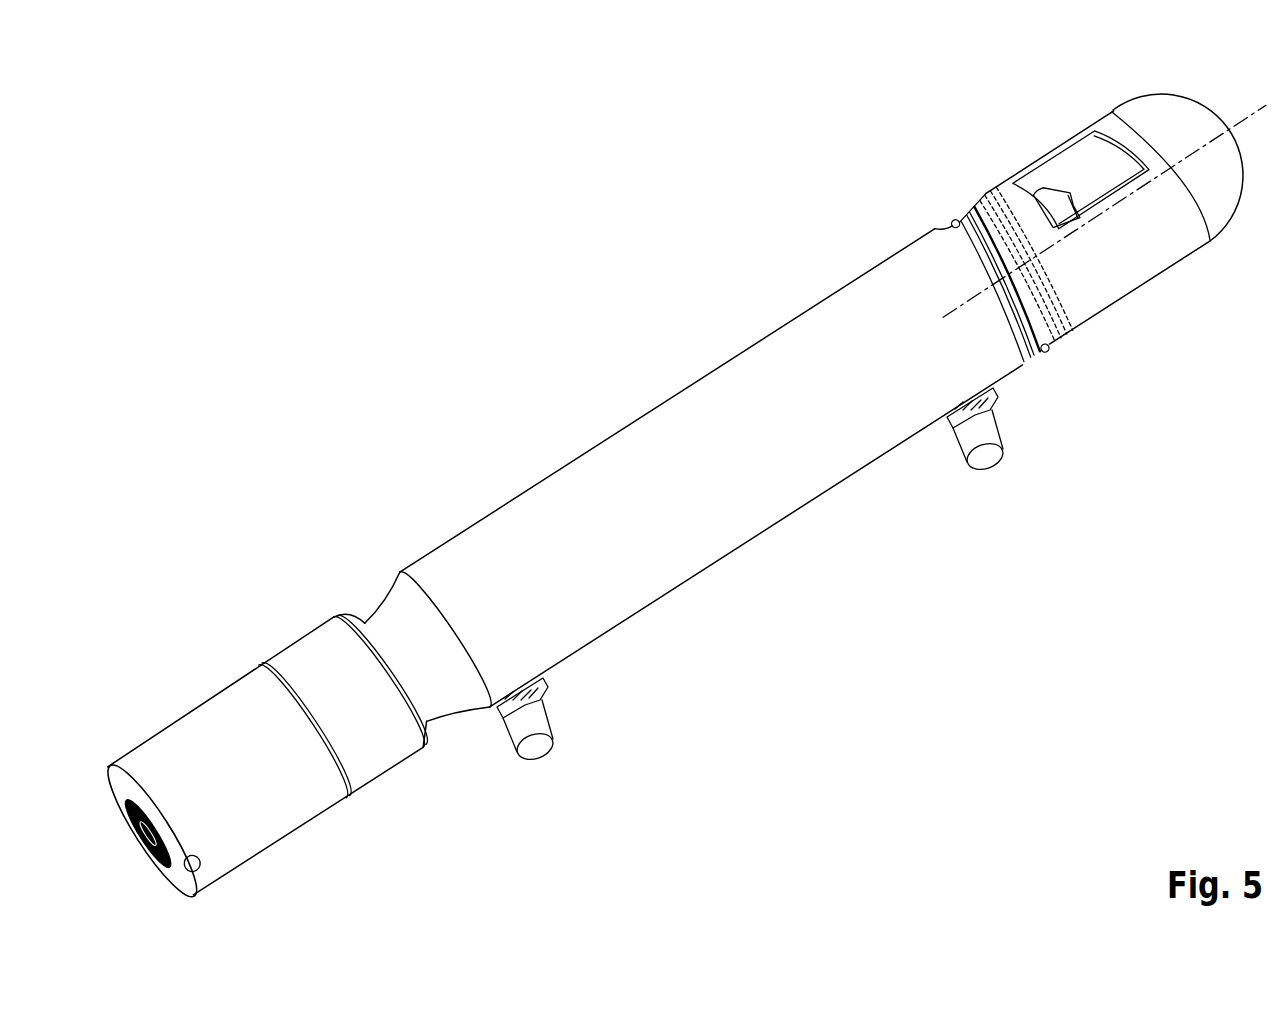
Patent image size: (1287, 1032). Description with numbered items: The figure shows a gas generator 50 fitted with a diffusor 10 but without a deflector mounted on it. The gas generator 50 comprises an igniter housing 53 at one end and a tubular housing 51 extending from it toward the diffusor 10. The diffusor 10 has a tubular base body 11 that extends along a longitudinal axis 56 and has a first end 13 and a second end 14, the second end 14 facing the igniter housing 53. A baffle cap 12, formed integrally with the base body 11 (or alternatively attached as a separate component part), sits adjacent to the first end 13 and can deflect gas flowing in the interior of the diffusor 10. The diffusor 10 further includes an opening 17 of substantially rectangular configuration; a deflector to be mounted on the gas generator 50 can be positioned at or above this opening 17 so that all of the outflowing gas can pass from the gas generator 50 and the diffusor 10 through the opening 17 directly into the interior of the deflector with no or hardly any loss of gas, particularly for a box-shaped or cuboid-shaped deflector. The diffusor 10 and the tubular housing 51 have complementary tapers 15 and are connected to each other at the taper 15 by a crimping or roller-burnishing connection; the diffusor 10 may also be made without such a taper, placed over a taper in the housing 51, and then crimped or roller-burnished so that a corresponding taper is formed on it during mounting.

The diffusor 10 is at (1177, 287).
The tubular base body 11 is at (1120, 283).
The baffle cap 12 is at (1173, 113).
The first end 13 is at (1112, 113).
The second end 14 is at (952, 218).
The taper 15 is at (1045, 352).
The opening 17 is at (1082, 177).
The gas generator 50 is at (833, 548).
The tubular housing 51 is at (690, 562).
The igniter housing 53 is at (147, 752).
The longitudinal axis 56 is at (1243, 113).